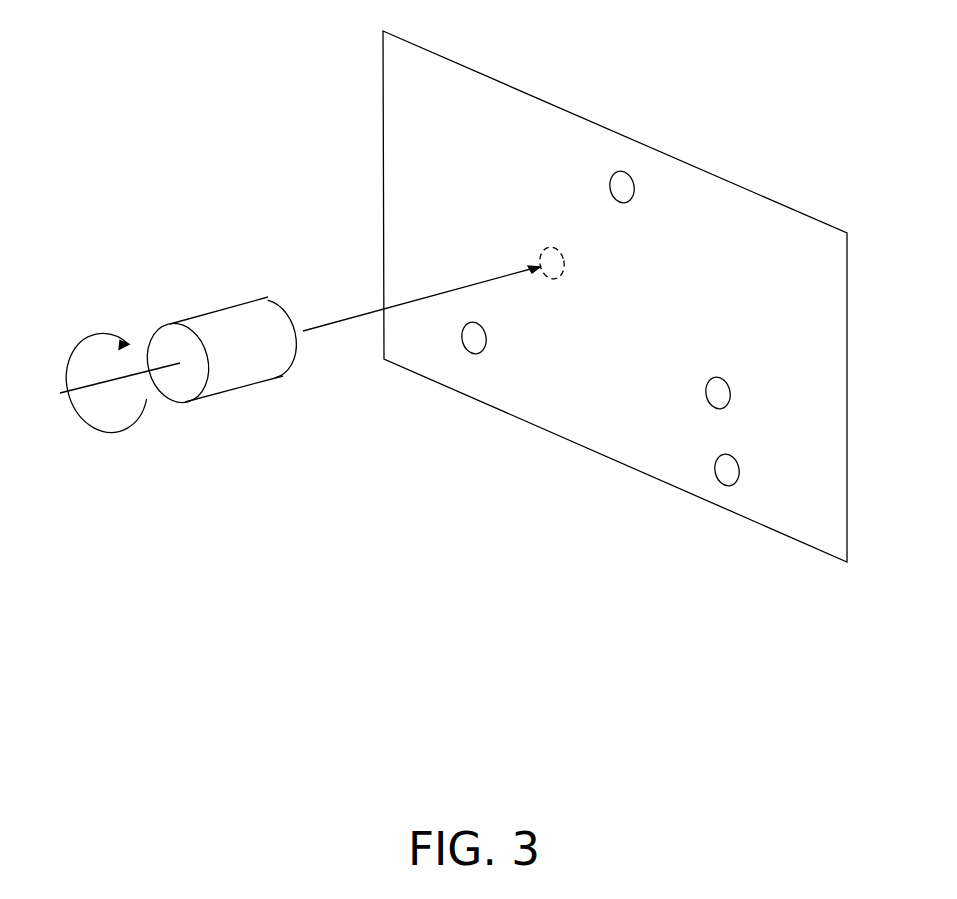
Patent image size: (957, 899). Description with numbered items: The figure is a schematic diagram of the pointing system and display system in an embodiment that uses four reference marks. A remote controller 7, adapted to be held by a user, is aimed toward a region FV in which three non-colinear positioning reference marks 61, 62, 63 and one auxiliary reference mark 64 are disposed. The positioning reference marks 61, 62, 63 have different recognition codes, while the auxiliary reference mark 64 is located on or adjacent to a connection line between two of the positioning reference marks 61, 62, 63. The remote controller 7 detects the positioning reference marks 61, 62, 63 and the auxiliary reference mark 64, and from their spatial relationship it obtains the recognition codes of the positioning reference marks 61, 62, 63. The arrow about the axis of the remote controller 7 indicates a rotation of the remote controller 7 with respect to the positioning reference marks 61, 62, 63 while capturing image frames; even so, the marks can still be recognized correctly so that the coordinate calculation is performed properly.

The remote controller 7 is at (228, 323).
The positioning reference mark 61 is at (474, 352).
The positioning reference mark 62 is at (625, 180).
The positioning reference mark 63 is at (723, 482).
The auxiliary reference mark 64 is at (716, 405).
The field of view FV is at (732, 180).